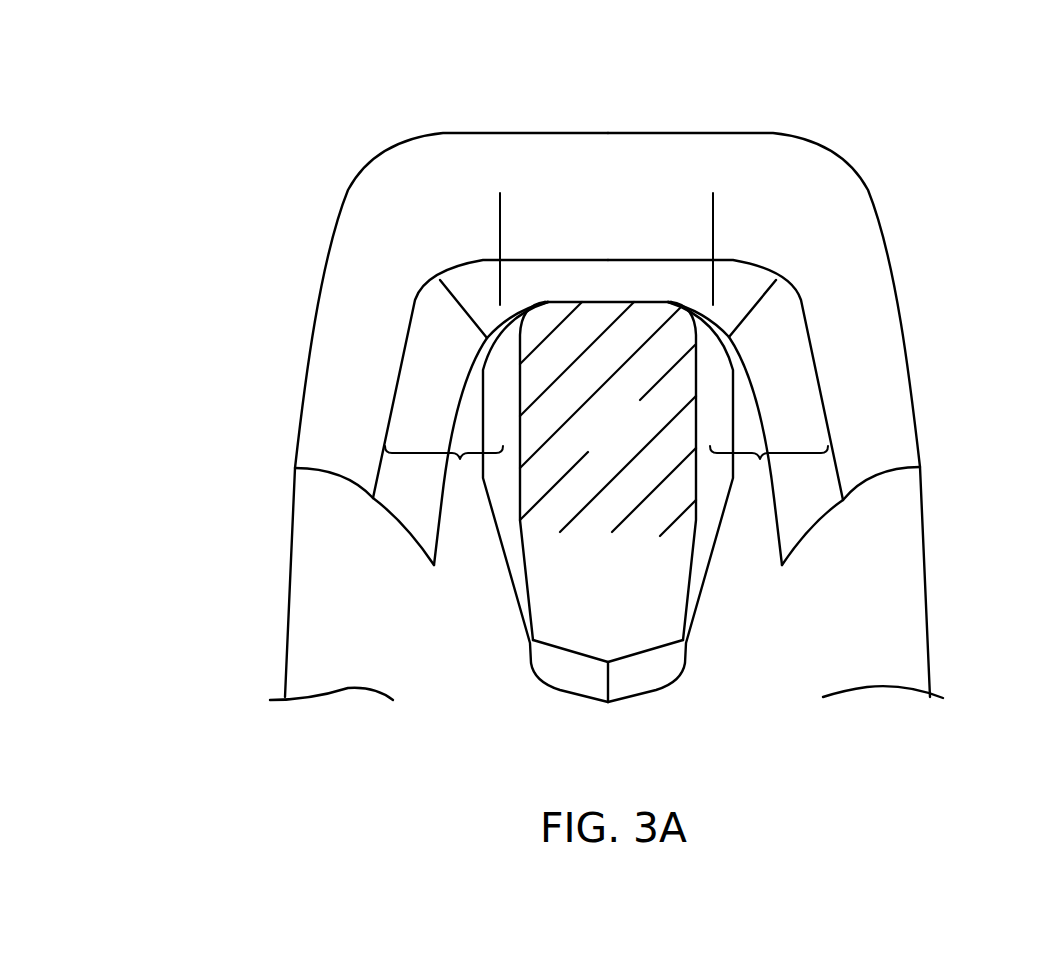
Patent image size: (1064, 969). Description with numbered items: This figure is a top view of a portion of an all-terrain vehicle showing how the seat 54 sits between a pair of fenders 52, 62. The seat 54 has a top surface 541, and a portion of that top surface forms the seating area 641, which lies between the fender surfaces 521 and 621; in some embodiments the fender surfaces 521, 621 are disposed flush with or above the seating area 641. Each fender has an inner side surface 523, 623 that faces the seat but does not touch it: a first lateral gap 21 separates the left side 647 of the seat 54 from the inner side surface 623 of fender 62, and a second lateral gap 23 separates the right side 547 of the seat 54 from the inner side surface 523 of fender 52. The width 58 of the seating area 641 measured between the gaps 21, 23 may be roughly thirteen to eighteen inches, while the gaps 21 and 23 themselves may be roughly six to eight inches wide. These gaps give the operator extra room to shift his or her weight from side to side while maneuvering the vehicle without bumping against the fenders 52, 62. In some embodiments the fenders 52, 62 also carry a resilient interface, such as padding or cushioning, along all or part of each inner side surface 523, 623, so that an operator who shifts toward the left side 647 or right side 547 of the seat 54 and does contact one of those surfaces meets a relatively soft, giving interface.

The fender 52 is at (391, 416).
The fender 62 is at (825, 415).
The fender surface 521 is at (362, 403).
The inner side surface 523 is at (442, 428).
The fender surface 621 is at (883, 374).
The inner side surface 623 is at (817, 414).
The seat 54 is at (631, 386).
The top surface 541 is at (590, 570).
The seating area 641 is at (628, 440).
The right side 547 is at (515, 432).
The left side 647 is at (730, 432).
The width 58 is at (713, 210).
The second lateral gap 23 is at (444, 469).
The first lateral gap 21 is at (769, 470).